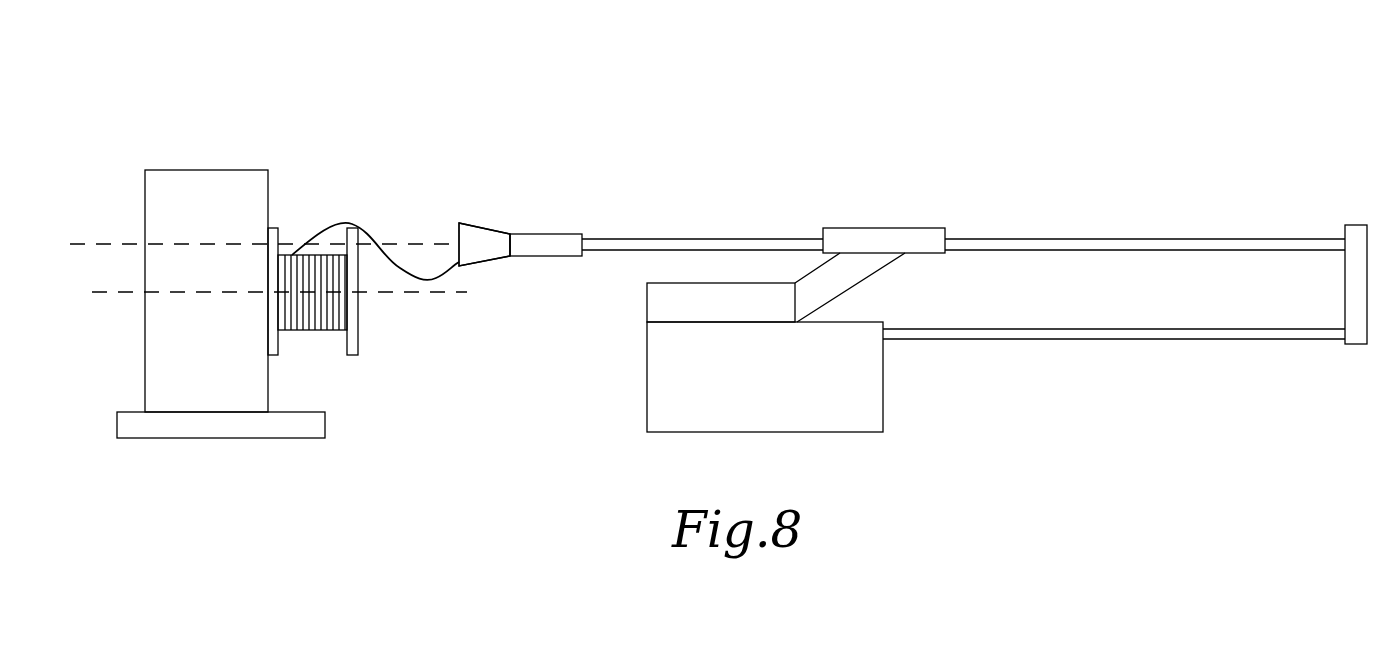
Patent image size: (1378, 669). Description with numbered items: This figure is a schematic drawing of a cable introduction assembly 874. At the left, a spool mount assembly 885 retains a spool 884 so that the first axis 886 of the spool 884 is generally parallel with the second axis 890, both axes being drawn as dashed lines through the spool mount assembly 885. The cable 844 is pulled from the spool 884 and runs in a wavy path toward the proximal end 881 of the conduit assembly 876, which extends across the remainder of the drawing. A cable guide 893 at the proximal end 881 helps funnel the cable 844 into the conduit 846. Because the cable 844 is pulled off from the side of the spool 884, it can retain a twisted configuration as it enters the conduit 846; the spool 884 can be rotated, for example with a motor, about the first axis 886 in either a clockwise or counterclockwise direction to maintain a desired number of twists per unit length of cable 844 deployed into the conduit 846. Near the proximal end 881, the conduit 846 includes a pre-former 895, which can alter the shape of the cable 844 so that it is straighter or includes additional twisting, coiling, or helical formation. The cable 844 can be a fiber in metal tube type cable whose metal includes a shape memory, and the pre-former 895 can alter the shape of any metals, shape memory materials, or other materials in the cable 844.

The cable introduction assembly 874 is at (548, 77).
The conduit assembly 876 is at (1367, 159).
The proximal end 881 is at (460, 222).
The spool 884 is at (355, 357).
The spool mount assembly 885 is at (207, 180).
The first axis 886 is at (104, 295).
The second axis 890 is at (91, 243).
The cable guide 893 is at (490, 248).
The pre-former 895 is at (547, 257).
The cable 844 is at (317, 232).
The conduit 846 is at (1148, 238).